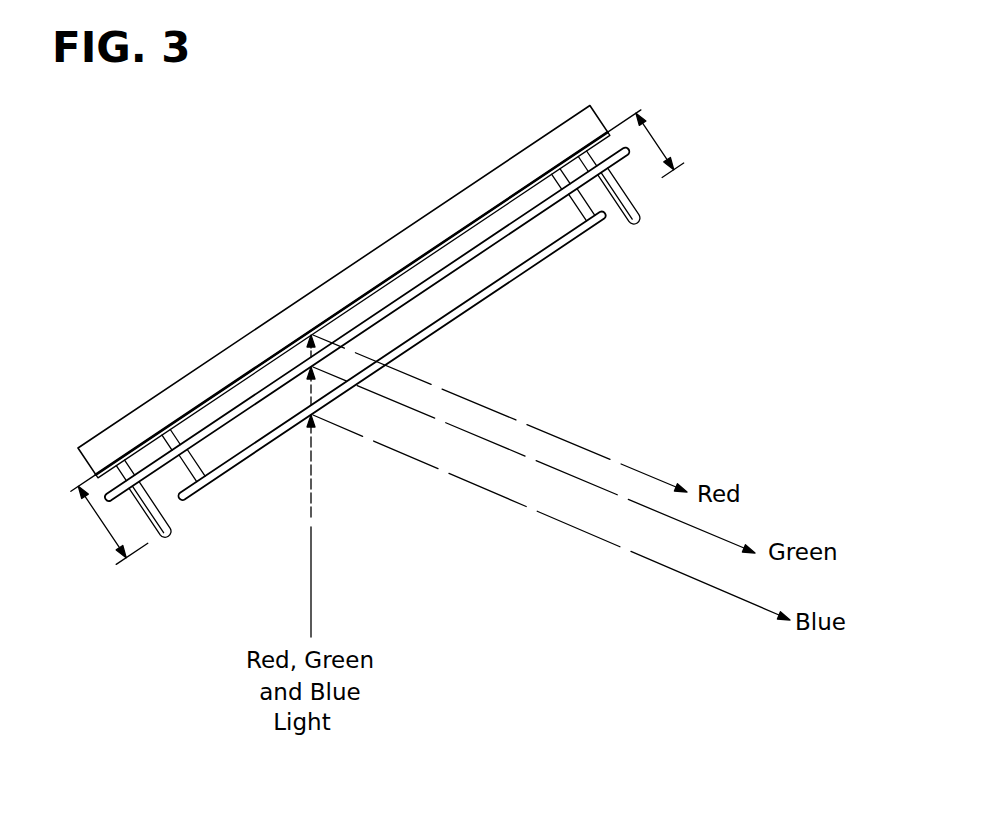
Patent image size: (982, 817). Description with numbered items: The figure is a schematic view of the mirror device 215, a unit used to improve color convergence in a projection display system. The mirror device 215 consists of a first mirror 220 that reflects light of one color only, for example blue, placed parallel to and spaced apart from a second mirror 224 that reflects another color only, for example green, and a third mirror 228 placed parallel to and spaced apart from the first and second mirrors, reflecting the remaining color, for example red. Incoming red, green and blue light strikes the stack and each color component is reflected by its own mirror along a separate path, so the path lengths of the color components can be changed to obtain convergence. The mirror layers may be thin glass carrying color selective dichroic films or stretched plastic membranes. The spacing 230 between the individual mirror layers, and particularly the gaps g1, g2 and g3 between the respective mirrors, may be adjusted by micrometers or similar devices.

The mirror device 215 is at (389, 347).
The third mirror 228 is at (420, 258).
The second mirror 224 is at (503, 240).
The first mirror 220 is at (460, 313).
The spacing 230 is at (103, 530).
The gap g1 is at (533, 198).
The gap g2 is at (560, 212).
The gap g3 is at (655, 138).